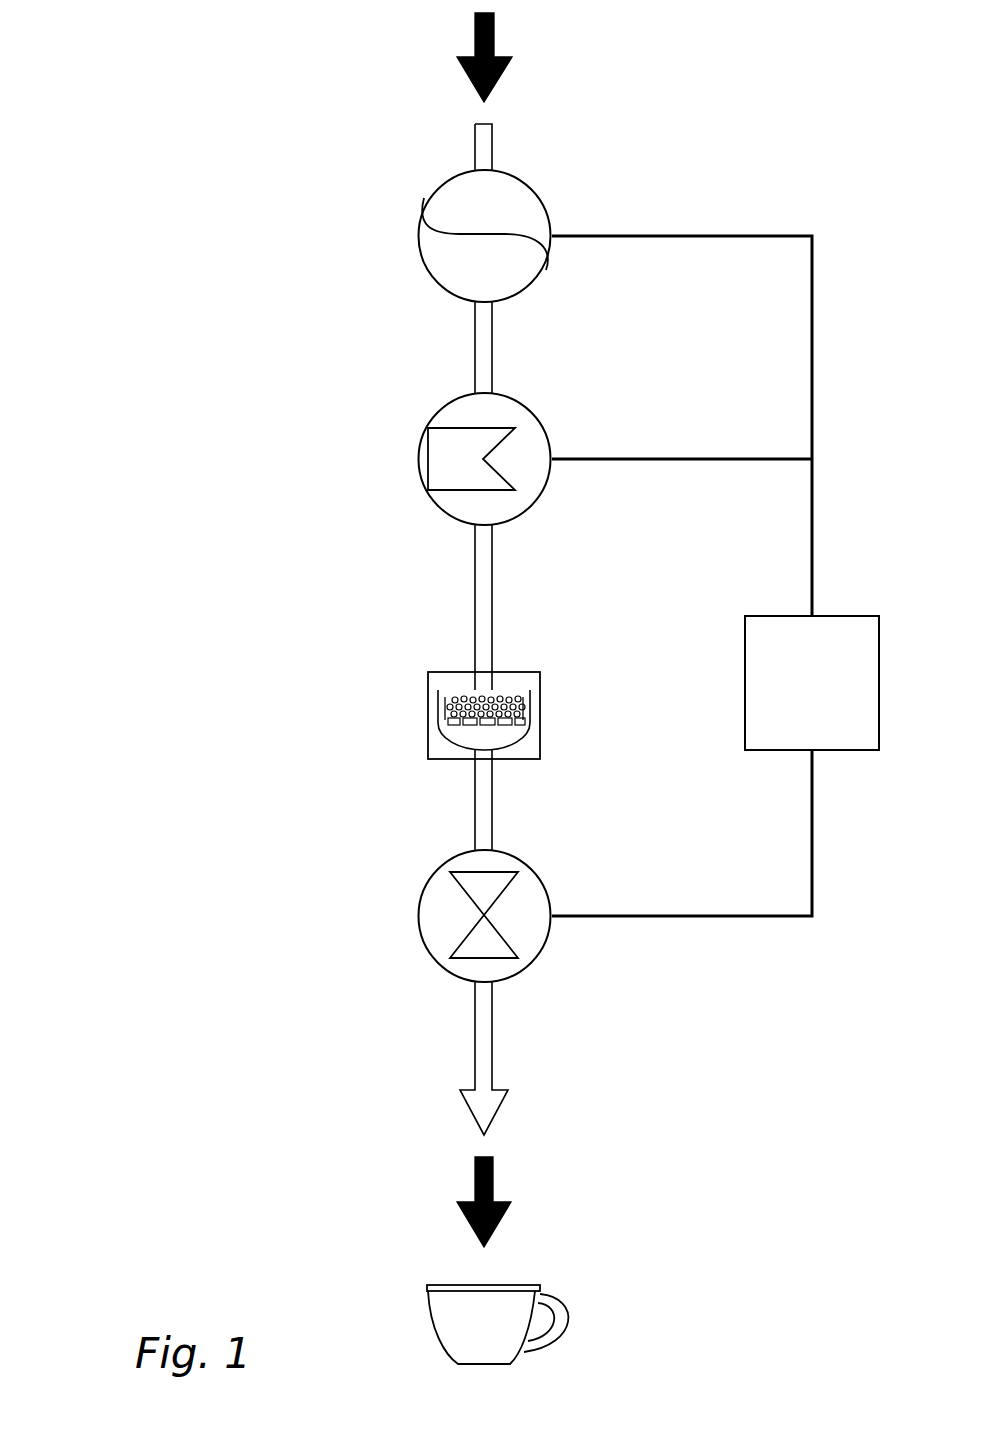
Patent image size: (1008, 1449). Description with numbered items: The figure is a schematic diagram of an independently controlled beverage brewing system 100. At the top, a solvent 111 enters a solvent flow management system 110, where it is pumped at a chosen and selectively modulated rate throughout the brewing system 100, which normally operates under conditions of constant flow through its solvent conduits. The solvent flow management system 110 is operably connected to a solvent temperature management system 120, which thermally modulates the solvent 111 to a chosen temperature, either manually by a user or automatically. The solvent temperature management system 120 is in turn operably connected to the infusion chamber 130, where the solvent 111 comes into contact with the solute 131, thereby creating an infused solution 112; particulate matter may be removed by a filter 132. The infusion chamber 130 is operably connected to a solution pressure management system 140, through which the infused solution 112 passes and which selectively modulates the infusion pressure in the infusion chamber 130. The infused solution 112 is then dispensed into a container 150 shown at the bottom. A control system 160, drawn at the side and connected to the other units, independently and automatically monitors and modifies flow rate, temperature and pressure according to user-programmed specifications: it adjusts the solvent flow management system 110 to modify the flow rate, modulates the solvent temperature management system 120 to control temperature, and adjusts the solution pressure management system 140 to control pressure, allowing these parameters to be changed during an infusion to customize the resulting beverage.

The brewing system 100 is at (128, 578).
The solvent flow management system 110 is at (418, 262).
The solvent 111 is at (505, 65).
The infused solution 112 is at (494, 1162).
The solvent temperature management system 120 is at (418, 462).
The infusion chamber 130 is at (455, 672).
The solute 131 is at (453, 698).
The filter 132 is at (454, 724).
The solution pressure management system 140 is at (418, 940).
The container 150 is at (560, 1296).
The control system 160 is at (834, 698).